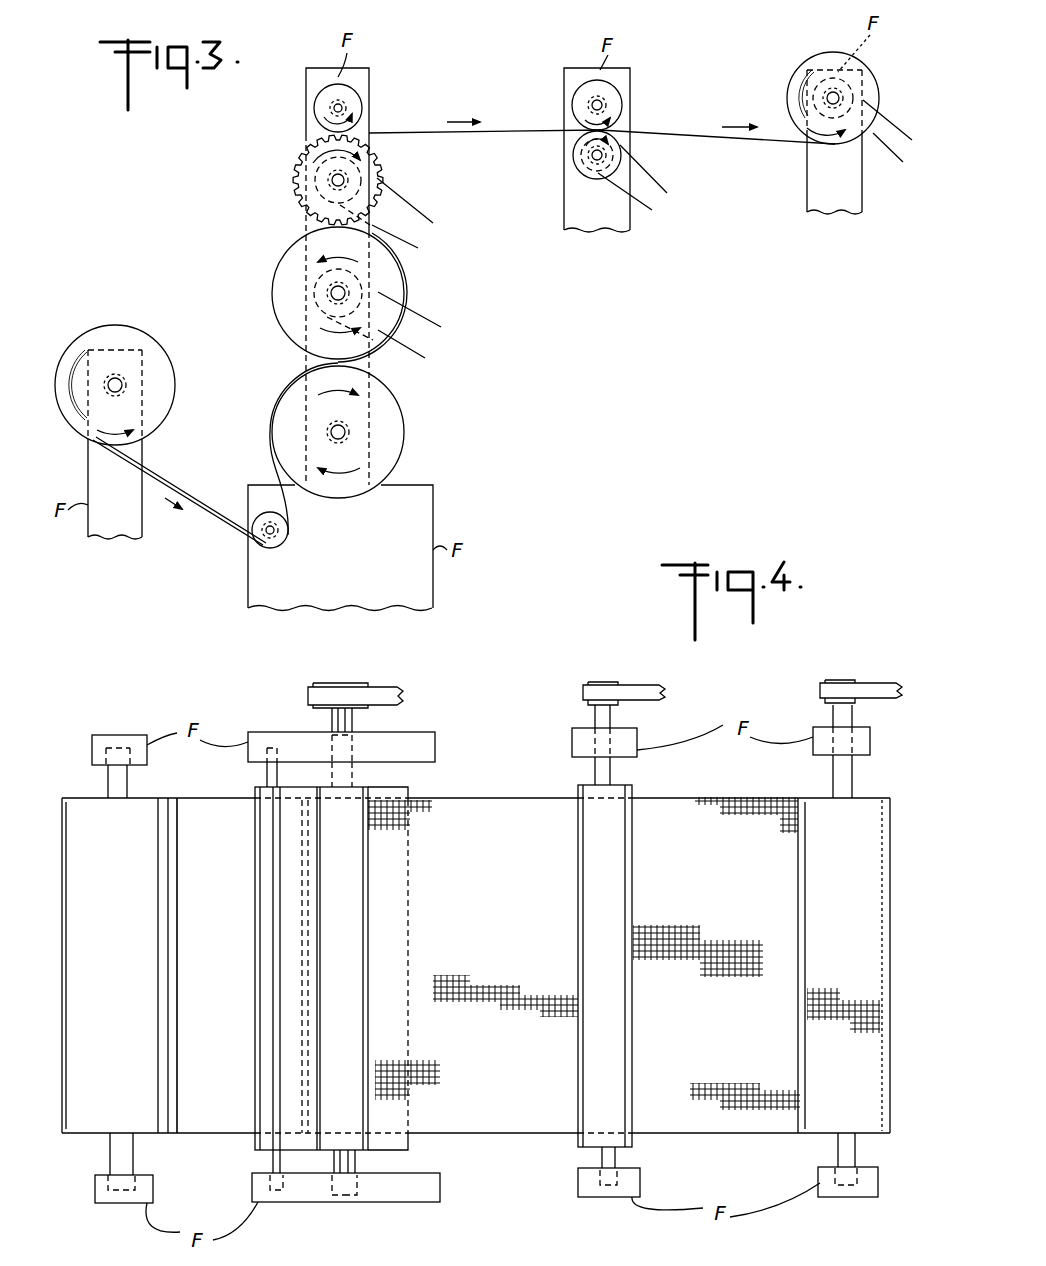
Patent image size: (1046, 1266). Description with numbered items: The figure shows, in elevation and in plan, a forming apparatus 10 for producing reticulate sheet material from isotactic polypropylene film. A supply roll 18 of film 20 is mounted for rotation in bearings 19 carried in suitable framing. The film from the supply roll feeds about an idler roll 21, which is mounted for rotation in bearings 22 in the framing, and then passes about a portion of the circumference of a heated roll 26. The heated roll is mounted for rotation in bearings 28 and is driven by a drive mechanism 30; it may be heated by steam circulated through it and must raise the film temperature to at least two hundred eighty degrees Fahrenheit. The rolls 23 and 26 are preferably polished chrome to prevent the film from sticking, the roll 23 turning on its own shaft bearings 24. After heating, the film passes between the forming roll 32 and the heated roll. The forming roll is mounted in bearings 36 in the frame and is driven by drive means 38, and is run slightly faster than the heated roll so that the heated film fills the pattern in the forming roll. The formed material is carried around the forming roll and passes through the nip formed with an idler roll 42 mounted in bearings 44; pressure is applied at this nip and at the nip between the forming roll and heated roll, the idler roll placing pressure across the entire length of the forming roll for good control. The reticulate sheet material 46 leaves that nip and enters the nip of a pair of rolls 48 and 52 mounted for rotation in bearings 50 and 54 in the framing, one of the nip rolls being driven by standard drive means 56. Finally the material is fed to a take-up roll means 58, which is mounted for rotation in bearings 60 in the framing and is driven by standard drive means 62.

In FIG. 3, the apparatus 10 is at (277, 213).
In FIG. 3, the supply roll 18 is at (110, 323).
In FIG. 4, the supply roll 18 is at (134, 934).
In FIG. 3, the bearings 19 is at (128, 383).
In FIG. 4, the bearings 19 is at (110, 1183).
In FIG. 3, the isotactic polypropylene film 20 is at (192, 503).
In FIG. 4, the isotactic polypropylene film 20 is at (197, 965).
In FIG. 3, the idler roll 21 is at (273, 540).
In FIG. 4, the idler roll 21 is at (257, 982).
In FIG. 3, the bearings 22 is at (288, 530).
In FIG. 4, the bearings 22 is at (270, 1182).
In FIG. 3, the roll 23 is at (385, 410).
In FIG. 3, the backing roller shaft 24 is at (350, 443).
In FIG. 3, the heated roll 26 is at (280, 277).
In FIG. 4, the heated roll 26 is at (400, 792).
In FIG. 3, the bearings 28 is at (345, 293).
In FIG. 4, the bearings 28 is at (327, 1183).
In FIG. 3, the drive mechanism 30 is at (437, 315).
In FIG. 3, the forming roll 32 is at (380, 167).
In FIG. 3, the bearings 36 is at (338, 180).
In FIG. 3, the drive means 38 is at (413, 202).
In FIG. 4, the drive means 38 is at (387, 693).
In FIG. 3, the idler roll 42 is at (355, 107).
In FIG. 4, the idler roll 42 is at (341, 941).
In FIG. 3, the bearings 44 is at (338, 108).
In FIG. 4, the bearings 44 is at (360, 1180).
In FIG. 3, the reticulate sheet material 46 is at (520, 133).
In FIG. 4, the reticulate sheet material 46 is at (476, 965).
In FIG. 3, the nip roll 48 is at (605, 92).
In FIG. 4, the nip roll 48 is at (604, 926).
In FIG. 3, the bearings 50 is at (603, 103).
In FIG. 4, the bearings 50 is at (600, 1178).
In FIG. 3, the nip roll 52 is at (620, 147).
In FIG. 3, the bearings 54 is at (603, 159).
In FIG. 3, the drive means 56 is at (650, 207).
In FIG. 4, the drive means 56 is at (645, 687).
In FIG. 3, the take-up roll means 58 is at (827, 52).
In FIG. 4, the take-up roll means 58 is at (840, 919).
In FIG. 3, the bearings 60 is at (840, 95).
In FIG. 4, the bearings 60 is at (857, 1178).
In FIG. 3, the drive means 62 is at (900, 125).
In FIG. 4, the drive means 62 is at (888, 683).